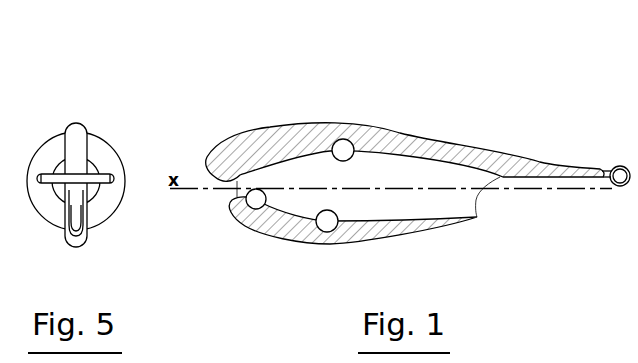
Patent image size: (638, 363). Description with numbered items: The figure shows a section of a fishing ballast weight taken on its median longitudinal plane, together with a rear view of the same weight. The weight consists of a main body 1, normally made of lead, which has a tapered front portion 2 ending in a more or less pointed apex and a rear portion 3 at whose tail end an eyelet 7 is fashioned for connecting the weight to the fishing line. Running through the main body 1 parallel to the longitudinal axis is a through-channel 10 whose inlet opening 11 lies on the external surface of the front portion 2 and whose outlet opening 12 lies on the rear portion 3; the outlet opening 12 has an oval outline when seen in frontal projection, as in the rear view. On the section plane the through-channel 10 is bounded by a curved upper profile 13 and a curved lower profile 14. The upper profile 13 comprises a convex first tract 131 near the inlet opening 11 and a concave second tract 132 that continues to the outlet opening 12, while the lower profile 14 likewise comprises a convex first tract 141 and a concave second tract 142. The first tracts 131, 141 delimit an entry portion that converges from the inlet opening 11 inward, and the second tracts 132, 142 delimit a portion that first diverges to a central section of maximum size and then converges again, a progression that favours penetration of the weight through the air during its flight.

In FIG. 1, the main body 1 is at (378, 178).
In FIG. 1, the front portion 2 is at (231, 137).
In FIG. 1, the rear portion 3 is at (533, 153).
In FIG. 1, the eyelet 7 is at (620, 166).
In FIG. 1, the through-channel 10 is at (428, 173).
In FIG. 1, the inlet opening 11 is at (226, 194).
In FIG. 5, the outlet opening 12 is at (72, 188).
In FIG. 1, the outlet opening 12 is at (479, 203).
In FIG. 1, the upper profile 13 is at (370, 172).
In FIG. 1, the lower profile 14 is at (400, 195).
In FIG. 1, the first tract of the upper profile 131 is at (213, 175).
In FIG. 1, the second tract of the upper profile 132 is at (334, 146).
In FIG. 1, the first tract of the lower profile 141 is at (258, 209).
In FIG. 1, the second tract of the lower profile 142 is at (323, 224).